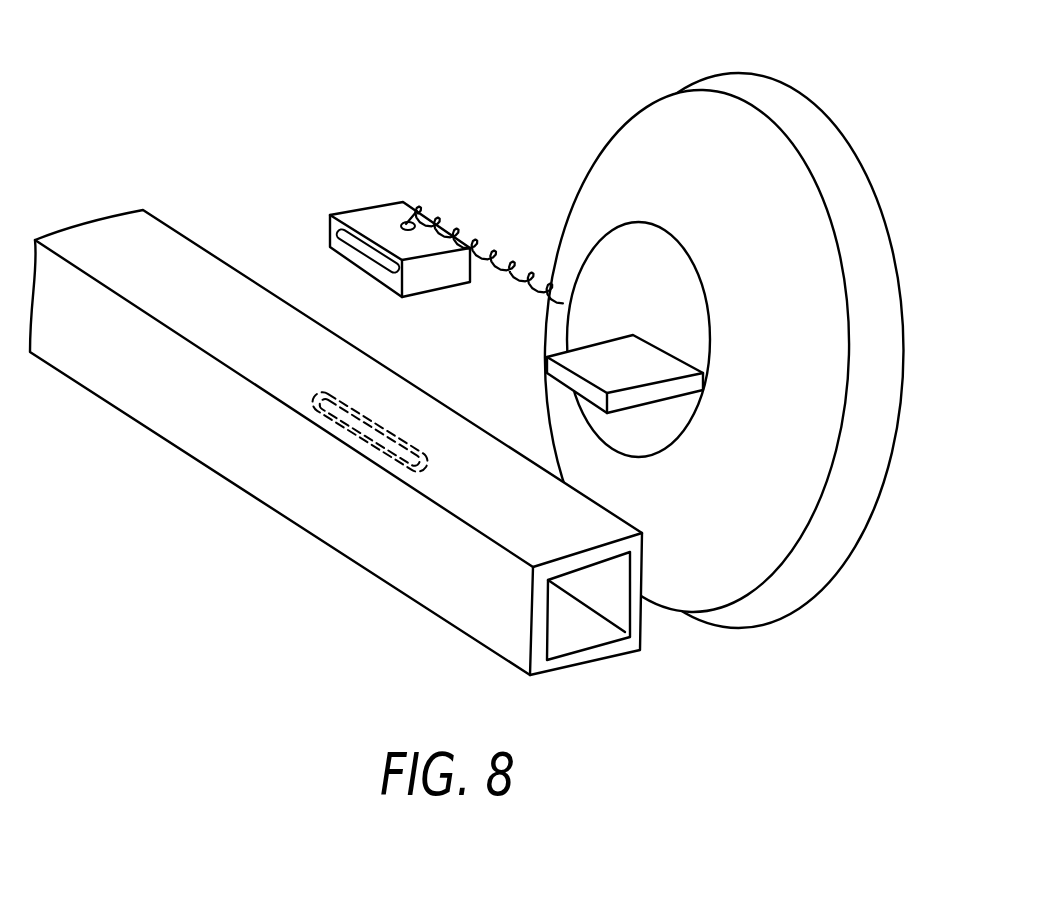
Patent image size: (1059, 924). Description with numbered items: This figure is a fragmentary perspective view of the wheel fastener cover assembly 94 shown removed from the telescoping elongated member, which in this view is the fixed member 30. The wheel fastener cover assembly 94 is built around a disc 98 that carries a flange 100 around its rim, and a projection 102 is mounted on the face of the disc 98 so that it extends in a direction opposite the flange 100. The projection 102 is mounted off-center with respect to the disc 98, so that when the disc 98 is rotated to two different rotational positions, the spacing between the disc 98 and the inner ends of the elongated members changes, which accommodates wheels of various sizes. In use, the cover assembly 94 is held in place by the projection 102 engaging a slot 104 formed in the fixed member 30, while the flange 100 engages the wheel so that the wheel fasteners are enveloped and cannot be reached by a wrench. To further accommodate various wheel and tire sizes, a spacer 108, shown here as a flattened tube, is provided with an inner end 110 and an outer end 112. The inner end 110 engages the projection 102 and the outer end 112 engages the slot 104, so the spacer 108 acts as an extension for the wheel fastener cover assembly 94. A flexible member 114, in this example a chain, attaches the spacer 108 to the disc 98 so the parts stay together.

The fixed member 30 is at (165, 398).
The wheel fastener cover assembly 94 is at (558, 71).
The disc 98 is at (690, 145).
The flange 100 is at (768, 604).
The projection 102 is at (608, 370).
The slot 104 is at (347, 433).
The spacer 108 is at (350, 203).
The inner end 110 is at (407, 222).
The outer end 112 is at (363, 270).
The flexible member 114 is at (508, 222).